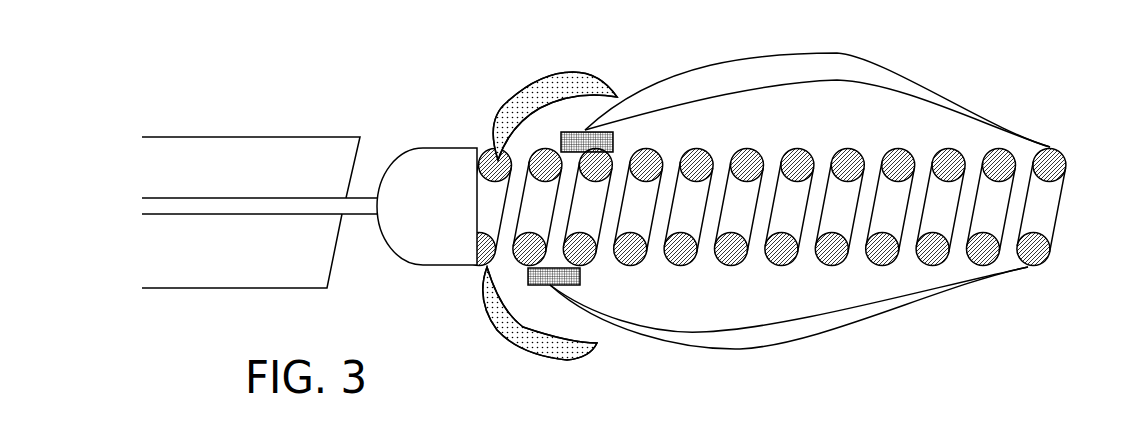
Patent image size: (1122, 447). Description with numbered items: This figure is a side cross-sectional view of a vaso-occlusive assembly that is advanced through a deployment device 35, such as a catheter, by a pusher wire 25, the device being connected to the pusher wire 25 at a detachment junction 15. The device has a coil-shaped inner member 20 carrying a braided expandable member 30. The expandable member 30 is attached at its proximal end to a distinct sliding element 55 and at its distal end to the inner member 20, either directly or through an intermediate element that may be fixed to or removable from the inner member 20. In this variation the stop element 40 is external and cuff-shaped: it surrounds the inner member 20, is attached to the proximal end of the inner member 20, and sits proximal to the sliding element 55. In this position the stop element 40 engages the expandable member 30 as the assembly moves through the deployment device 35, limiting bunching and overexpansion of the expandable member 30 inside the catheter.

The detachment junction 15 is at (412, 233).
The inner member 20 is at (1048, 165).
The pusher wire 25 is at (360, 201).
The expandable member 30 is at (847, 318).
The deployment device 35 is at (293, 136).
The stop element 40 is at (490, 320).
The sliding element 55 is at (643, 300).